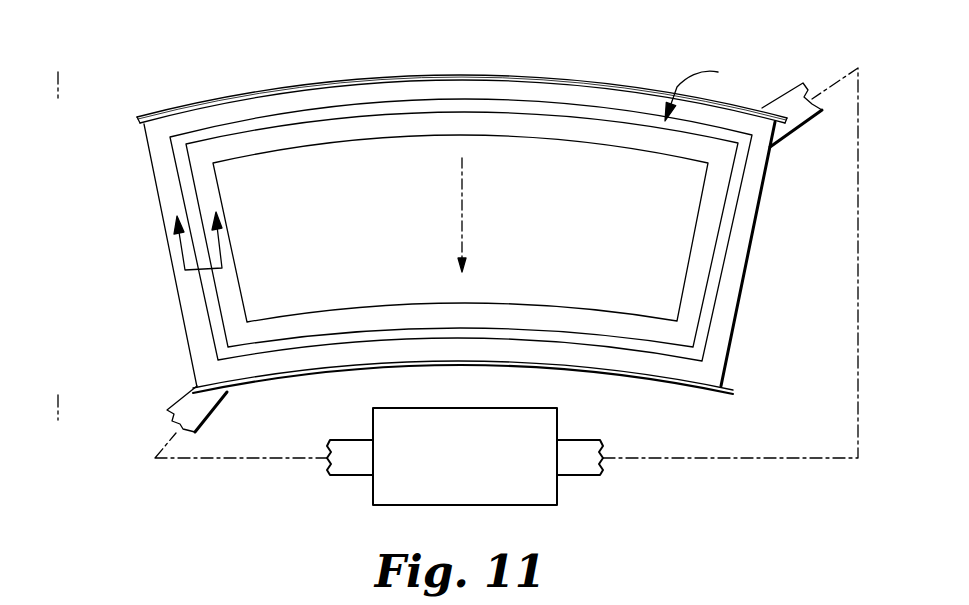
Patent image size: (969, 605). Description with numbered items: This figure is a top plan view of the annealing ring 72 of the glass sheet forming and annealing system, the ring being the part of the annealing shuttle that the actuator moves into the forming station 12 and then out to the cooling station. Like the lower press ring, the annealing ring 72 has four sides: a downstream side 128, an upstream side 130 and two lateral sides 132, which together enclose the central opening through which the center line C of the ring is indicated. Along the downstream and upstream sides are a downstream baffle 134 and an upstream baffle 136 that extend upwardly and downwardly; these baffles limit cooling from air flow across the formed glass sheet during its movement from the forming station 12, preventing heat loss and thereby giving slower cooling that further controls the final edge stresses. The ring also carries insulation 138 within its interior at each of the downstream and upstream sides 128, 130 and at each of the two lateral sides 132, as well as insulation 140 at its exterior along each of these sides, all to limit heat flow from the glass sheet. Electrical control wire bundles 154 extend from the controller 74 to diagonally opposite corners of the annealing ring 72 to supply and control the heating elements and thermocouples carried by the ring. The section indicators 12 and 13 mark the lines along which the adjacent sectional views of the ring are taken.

The forming station 12 is at (92, 420).
The section line 13-13 for FIG. 13 is at (185, 270).
The annealing ring 72 is at (707, 91).
The controller 74 is at (465, 408).
The downstream side 128 is at (460, 332).
The upstream side 130 is at (570, 110).
The lateral sides 132 is at (190, 215).
The downstream baffle 134 is at (577, 370).
The upstream baffle 136 is at (635, 85).
The insulation 138 is at (383, 125).
The insulation 140 is at (295, 97).
The electrical control wire bundles 154 is at (778, 100).
The center line C is at (478, 215).